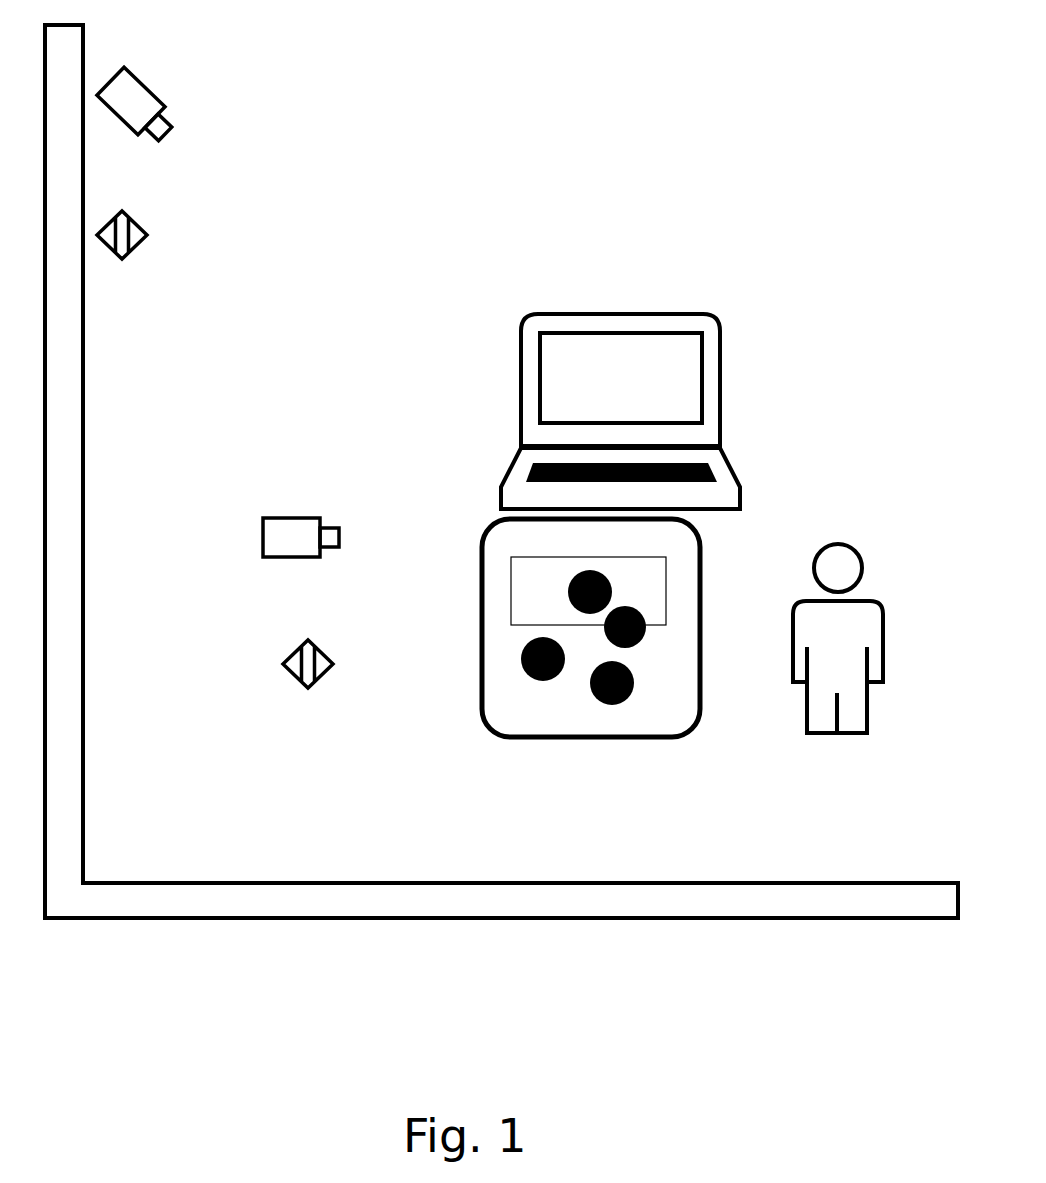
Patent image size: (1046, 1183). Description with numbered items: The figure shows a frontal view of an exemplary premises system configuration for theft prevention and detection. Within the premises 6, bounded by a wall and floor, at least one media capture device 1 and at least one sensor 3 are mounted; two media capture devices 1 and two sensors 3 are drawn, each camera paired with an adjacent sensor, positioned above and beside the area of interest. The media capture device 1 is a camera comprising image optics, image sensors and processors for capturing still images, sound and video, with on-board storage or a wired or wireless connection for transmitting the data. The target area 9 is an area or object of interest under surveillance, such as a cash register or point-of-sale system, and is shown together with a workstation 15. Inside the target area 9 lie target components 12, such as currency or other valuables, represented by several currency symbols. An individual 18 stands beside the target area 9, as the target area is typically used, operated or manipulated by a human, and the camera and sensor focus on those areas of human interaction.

The media capture device 1 is at (145, 103).
The sensor 3 is at (130, 240).
The premises 6 is at (83, 372).
The target area 9 is at (510, 566).
The target component 12 is at (507, 650).
The workstation 15 is at (521, 360).
The individual 18 is at (848, 572).